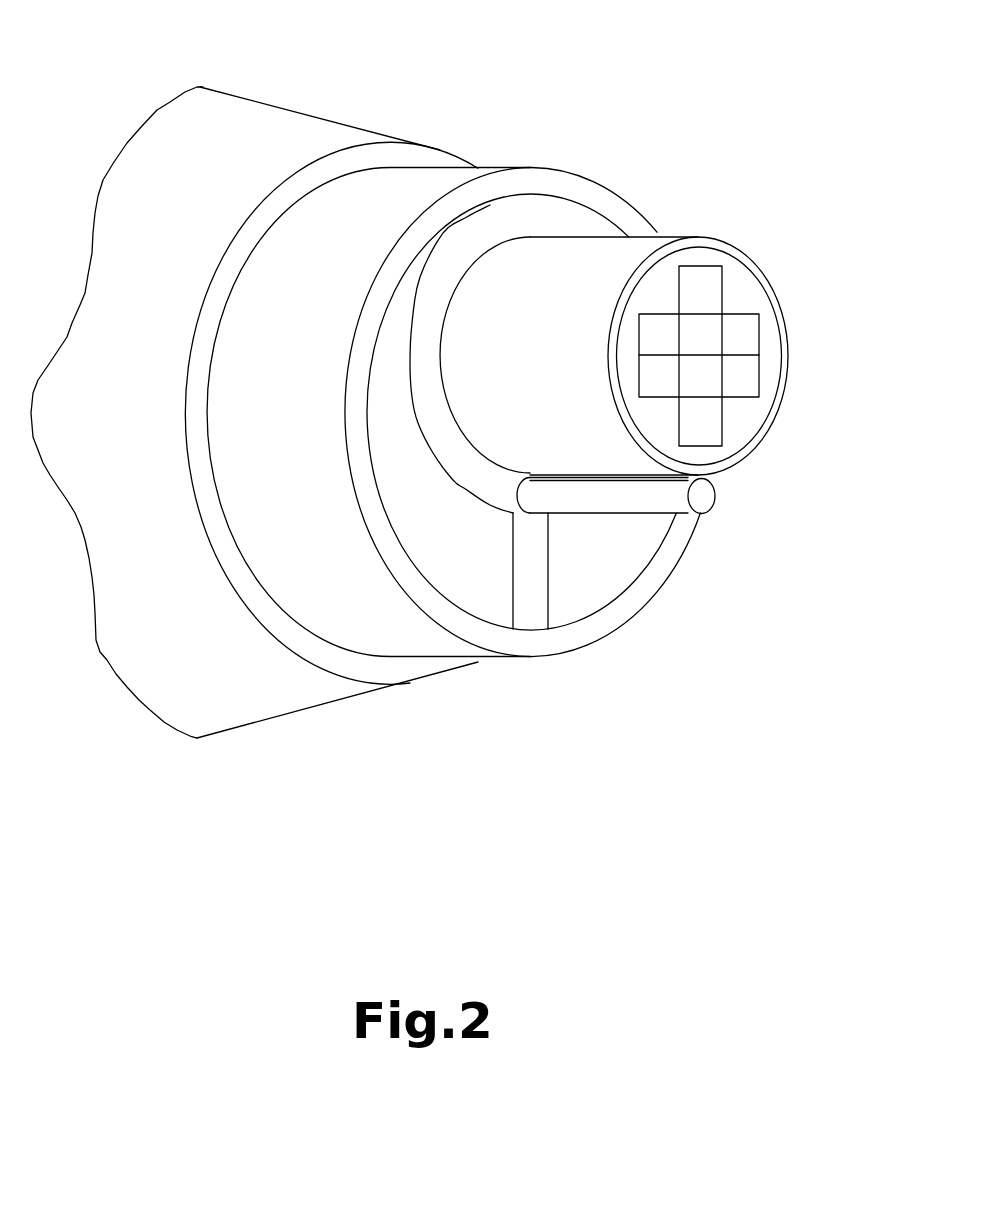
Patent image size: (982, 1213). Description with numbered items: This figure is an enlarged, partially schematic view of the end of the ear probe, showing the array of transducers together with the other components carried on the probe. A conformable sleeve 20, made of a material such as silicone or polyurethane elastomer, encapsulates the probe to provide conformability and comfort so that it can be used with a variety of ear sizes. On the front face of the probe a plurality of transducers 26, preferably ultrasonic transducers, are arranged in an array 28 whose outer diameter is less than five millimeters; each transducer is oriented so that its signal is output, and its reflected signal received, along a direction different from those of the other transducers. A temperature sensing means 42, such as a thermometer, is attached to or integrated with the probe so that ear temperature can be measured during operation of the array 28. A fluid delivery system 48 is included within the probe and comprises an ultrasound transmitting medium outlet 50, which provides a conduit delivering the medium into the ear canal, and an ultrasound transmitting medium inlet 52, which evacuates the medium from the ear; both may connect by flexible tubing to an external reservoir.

The conformable sleeve 20 is at (259, 88).
The transducers 26 is at (743, 338).
The array 28 is at (741, 270).
The temperature sensing means 42 is at (735, 510).
The fluid delivery system 48 is at (560, 690).
The ultrasound transmitting medium outlet 50 is at (463, 610).
The ultrasound transmitting medium inlet 52 is at (625, 600).